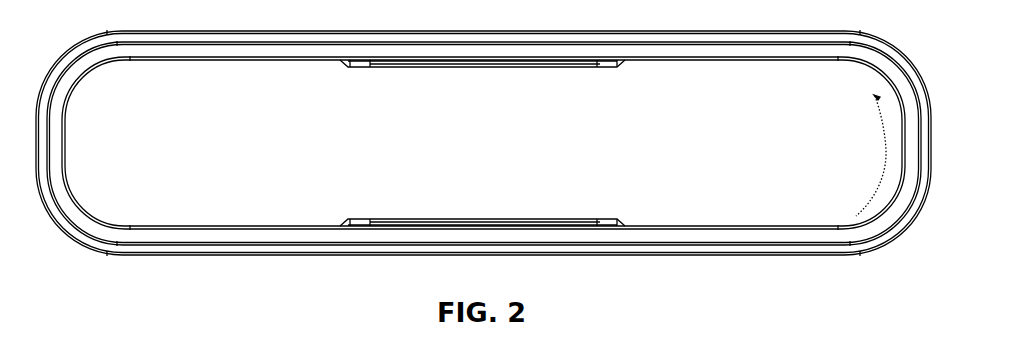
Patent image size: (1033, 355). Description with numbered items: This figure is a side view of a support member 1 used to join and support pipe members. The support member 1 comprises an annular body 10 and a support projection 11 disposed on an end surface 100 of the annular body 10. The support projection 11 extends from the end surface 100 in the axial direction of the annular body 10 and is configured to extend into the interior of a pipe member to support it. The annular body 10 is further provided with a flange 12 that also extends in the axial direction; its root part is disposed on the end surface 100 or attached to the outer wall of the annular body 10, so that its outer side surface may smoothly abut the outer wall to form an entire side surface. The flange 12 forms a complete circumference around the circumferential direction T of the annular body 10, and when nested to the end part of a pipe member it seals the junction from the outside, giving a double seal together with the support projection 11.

The support member 1 is at (937, 34).
The end surface 100 is at (486, 133).
The flange 12 is at (153, 44).
The annular body 10 is at (733, 58).
The support projection 11 is at (524, 68).
The circumferential direction T is at (871, 155).